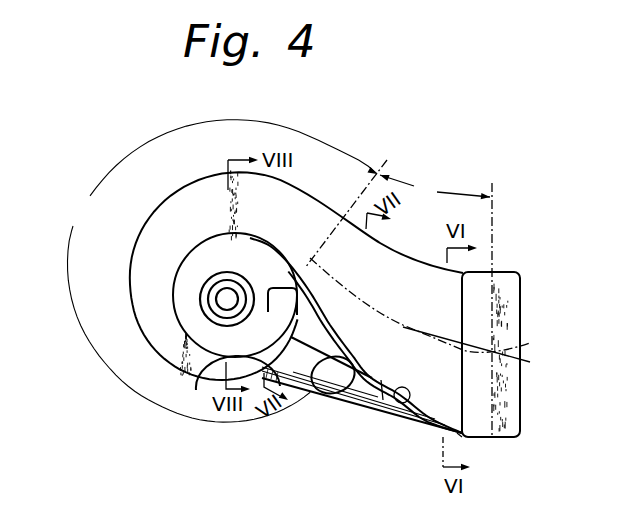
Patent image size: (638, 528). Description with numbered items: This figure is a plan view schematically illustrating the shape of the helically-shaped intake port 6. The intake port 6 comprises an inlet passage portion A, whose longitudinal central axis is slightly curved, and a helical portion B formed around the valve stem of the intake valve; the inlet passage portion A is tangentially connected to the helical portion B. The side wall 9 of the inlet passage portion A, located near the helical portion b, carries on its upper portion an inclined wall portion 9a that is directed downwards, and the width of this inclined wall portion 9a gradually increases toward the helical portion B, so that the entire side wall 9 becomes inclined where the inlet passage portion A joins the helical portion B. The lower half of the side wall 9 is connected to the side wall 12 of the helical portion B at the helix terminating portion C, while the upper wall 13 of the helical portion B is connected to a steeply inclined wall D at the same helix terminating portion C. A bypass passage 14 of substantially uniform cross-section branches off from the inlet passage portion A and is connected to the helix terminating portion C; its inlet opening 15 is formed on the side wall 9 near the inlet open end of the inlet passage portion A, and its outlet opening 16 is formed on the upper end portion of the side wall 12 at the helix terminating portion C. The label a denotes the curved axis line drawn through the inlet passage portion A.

The helically-shaped intake port 6 is at (512, 270).
The side wall 9 is at (459, 437).
The inclined wall portion 9a is at (383, 400).
The side wall of the helical portion 12 is at (133, 323).
The upper wall of the helical portion 13 is at (141, 274).
The bypass passage 14 is at (357, 400).
The inlet opening 15 is at (404, 403).
The outlet opening 16 is at (203, 380).
The inlet passage portion A is at (397, 214).
The helical portion B is at (223, 271).
The helix terminating portion C is at (290, 322).
The steeply inclined wall D is at (280, 292).
The axis a is at (435, 310).
The helical portion b is at (222, 302).